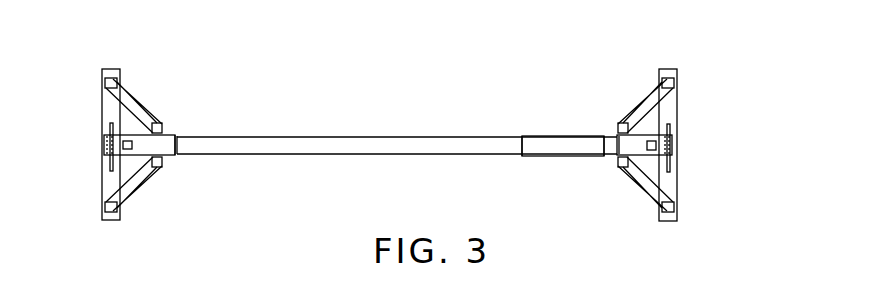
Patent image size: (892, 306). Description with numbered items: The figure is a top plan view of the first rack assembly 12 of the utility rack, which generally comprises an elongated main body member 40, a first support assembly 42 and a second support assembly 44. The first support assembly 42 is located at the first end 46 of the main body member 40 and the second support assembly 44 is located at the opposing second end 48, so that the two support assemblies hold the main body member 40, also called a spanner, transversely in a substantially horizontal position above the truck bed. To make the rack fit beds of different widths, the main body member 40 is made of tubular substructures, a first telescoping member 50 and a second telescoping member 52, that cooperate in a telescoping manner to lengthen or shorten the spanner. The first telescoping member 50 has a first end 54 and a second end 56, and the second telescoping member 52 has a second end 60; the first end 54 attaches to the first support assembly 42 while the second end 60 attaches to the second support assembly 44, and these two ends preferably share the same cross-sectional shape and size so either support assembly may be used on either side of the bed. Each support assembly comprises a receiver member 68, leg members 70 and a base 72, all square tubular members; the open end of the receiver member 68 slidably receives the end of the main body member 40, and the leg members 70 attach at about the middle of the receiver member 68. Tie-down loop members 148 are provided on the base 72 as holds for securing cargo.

The first rack assembly 12 is at (456, 76).
The main body member 40 is at (334, 132).
The first support assembly 42 is at (91, 178).
The second support assembly 44 is at (688, 164).
The first end 46 is at (175, 127).
The second end 48 is at (591, 122).
The first telescoping member 50 is at (355, 147).
The second telescoping member 52 is at (548, 146).
The first end 54 is at (184, 166).
The second end 56 is at (521, 161).
The second end 60 is at (593, 173).
The receiver member 68 is at (143, 143).
The leg members 70 is at (130, 190).
The base 72 is at (108, 116).
The tie-down loop members 148 is at (675, 126).